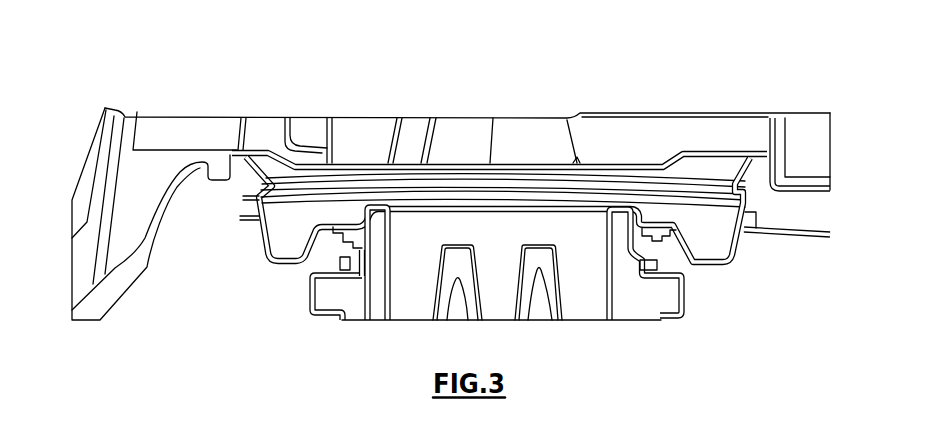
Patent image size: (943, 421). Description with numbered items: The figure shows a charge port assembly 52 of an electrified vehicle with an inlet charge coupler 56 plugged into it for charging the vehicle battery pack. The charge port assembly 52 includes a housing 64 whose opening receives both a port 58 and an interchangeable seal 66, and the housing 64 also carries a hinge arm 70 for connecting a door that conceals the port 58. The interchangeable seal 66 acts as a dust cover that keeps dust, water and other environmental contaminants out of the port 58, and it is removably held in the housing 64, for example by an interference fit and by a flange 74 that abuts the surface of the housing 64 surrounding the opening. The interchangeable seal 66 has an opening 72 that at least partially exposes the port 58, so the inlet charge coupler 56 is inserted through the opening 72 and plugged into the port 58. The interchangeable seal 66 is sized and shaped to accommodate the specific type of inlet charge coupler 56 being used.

The charge port assembly 52 is at (676, 86).
The inlet charge coupler 56 is at (664, 333).
The port 58 is at (499, 150).
The housing 64 is at (821, 149).
The interchangeable seal 66 is at (742, 253).
The hinge arm 70 is at (103, 216).
The opening 72 is at (640, 220).
The flange 74 is at (270, 157).